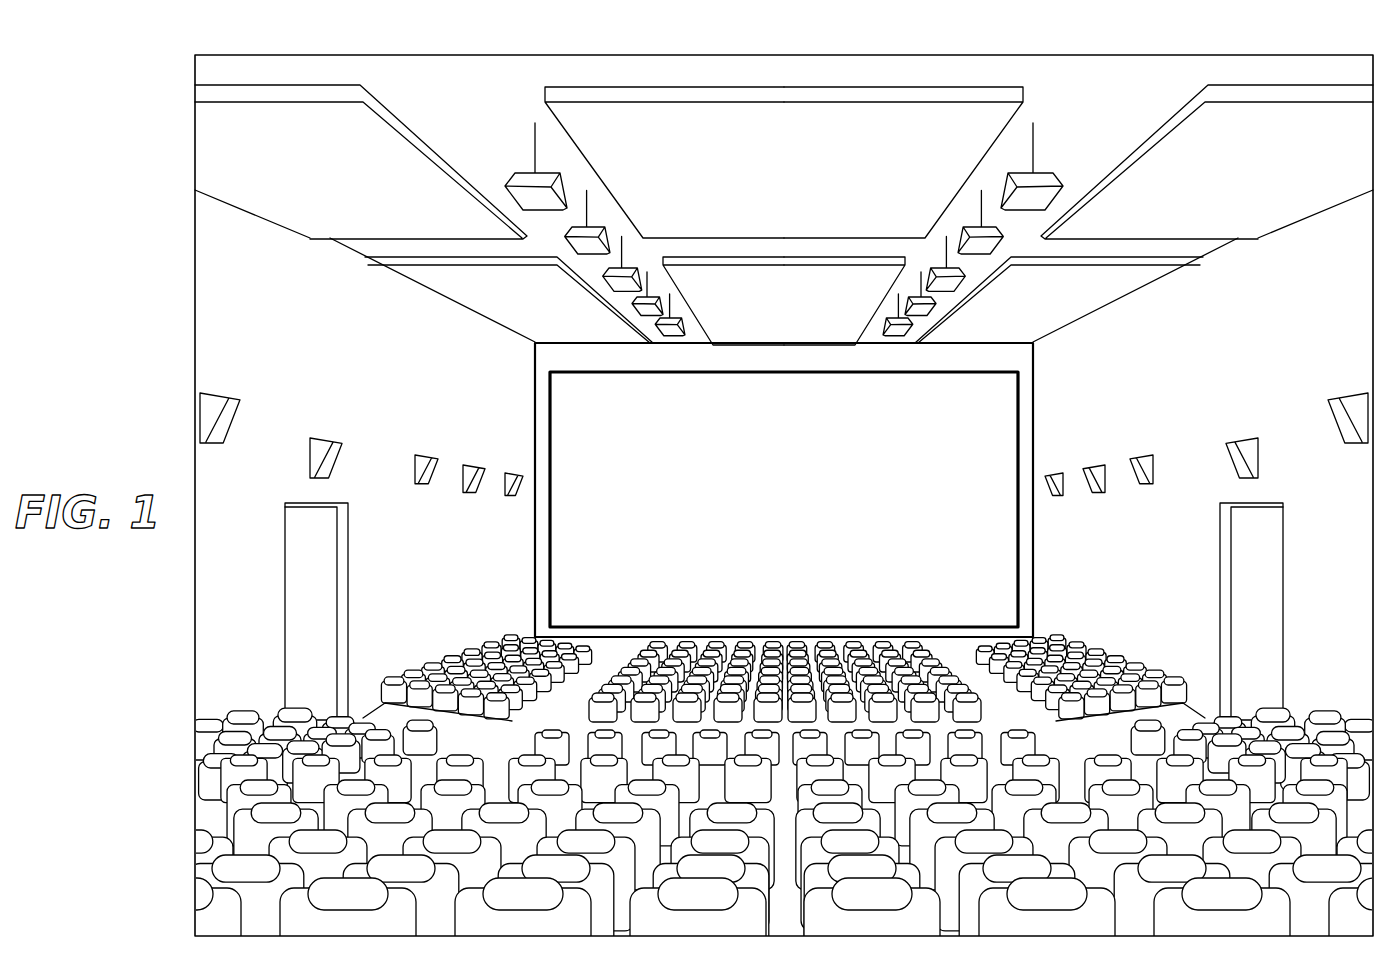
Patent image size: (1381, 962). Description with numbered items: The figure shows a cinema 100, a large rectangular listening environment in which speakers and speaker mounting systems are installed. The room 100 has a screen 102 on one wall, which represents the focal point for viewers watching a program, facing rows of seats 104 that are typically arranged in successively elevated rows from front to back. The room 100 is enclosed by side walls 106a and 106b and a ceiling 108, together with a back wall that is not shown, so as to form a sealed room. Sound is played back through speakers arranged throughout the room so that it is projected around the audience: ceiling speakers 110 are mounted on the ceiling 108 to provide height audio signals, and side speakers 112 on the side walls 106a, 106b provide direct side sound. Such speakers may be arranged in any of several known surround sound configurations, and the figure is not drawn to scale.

The cinema 100 is at (176, 70).
The screen 102 is at (784, 490).
The seats 104 is at (216, 814).
The side wall 106a is at (365, 455).
The side wall 106b is at (1203, 455).
The ceiling 108 is at (784, 209).
The ceiling speakers 110 is at (518, 162).
The side speakers 112 is at (421, 452).